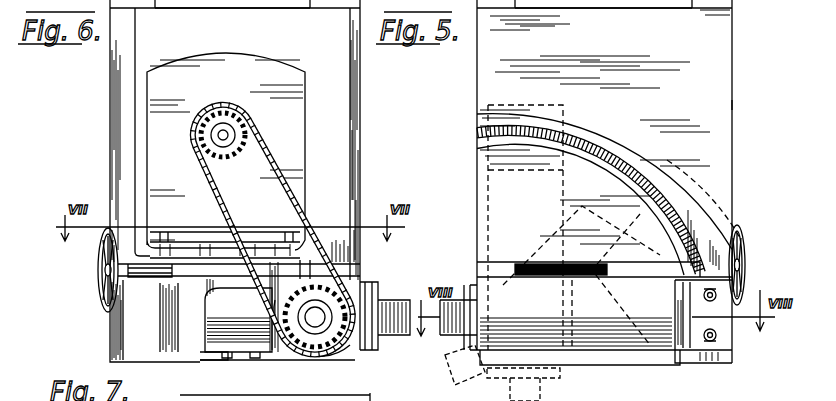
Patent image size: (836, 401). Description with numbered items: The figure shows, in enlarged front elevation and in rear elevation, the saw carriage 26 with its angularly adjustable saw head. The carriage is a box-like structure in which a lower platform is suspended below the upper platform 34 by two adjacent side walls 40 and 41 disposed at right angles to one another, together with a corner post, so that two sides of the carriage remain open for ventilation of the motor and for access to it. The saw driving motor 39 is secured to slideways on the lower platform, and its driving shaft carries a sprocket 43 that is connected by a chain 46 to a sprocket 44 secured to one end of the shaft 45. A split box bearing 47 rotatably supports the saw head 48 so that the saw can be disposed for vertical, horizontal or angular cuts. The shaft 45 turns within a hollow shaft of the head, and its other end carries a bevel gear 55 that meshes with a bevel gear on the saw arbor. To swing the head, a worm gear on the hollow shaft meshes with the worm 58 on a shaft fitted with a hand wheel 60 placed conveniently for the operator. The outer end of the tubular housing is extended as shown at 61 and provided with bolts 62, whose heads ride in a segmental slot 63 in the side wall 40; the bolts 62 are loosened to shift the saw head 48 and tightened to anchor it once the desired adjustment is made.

In FIG. 5, the saw carriage 26 is at (732, 105).
In FIG. 6, the upper platform 34 is at (280, 0).
In FIG. 5, the upper platform 34 is at (645, 0).
In FIG. 6, the saw driving motor 39 is at (157, 143).
In FIG. 5, the side wall 40 is at (690, 50).
In FIG. 6, the side wall 41 is at (355, 108).
In FIG. 6, the sprocket 43 is at (236, 131).
In FIG. 6, the sprocket 44 is at (318, 332).
In FIG. 6, the shaft 45 is at (357, 343).
In FIG. 6, the chain 46 is at (300, 204).
In FIG. 6, the split box bearing 47 is at (350, 280).
In FIG. 6, the saw head 48 is at (228, 355).
In FIG. 5, the saw head 48 is at (466, 196).
In FIG. 6, the bevel gear 55 is at (205, 276).
In FIG. 5, the worm 58 is at (525, 262).
In FIG. 6, the hand wheel 60 is at (99, 305).
In FIG. 5, the hand wheel 60 is at (740, 262).
In FIG. 5, the extension of tubular housing 61 is at (712, 352).
In FIG. 5, the bolts 62 is at (716, 335).
In FIG. 5, the segmental slot 63 is at (705, 266).